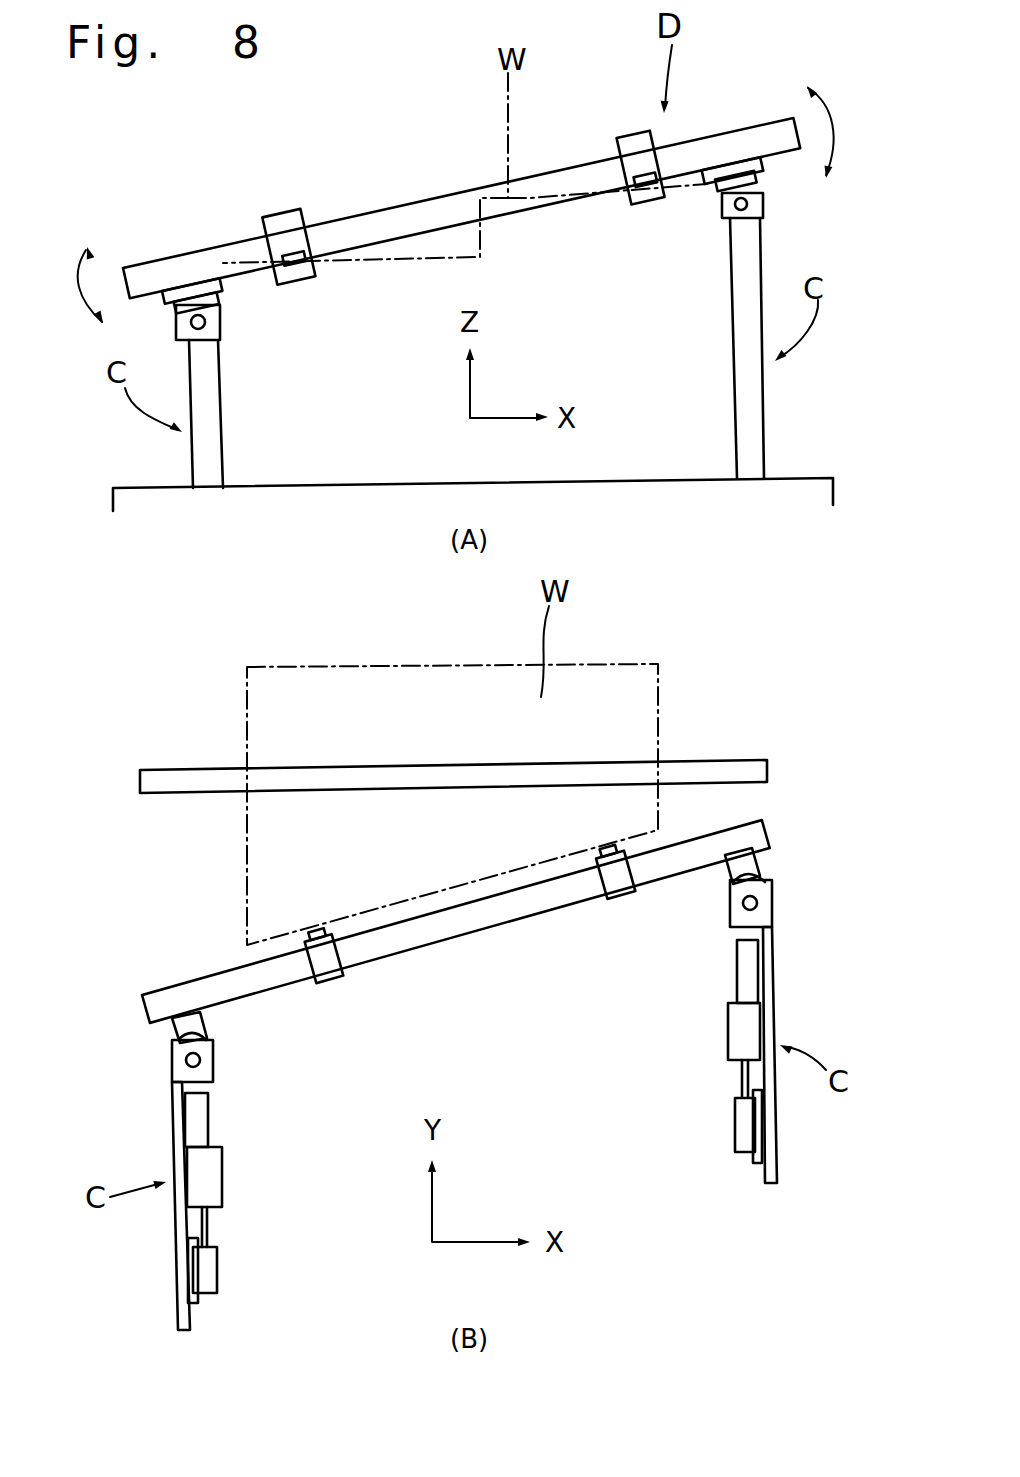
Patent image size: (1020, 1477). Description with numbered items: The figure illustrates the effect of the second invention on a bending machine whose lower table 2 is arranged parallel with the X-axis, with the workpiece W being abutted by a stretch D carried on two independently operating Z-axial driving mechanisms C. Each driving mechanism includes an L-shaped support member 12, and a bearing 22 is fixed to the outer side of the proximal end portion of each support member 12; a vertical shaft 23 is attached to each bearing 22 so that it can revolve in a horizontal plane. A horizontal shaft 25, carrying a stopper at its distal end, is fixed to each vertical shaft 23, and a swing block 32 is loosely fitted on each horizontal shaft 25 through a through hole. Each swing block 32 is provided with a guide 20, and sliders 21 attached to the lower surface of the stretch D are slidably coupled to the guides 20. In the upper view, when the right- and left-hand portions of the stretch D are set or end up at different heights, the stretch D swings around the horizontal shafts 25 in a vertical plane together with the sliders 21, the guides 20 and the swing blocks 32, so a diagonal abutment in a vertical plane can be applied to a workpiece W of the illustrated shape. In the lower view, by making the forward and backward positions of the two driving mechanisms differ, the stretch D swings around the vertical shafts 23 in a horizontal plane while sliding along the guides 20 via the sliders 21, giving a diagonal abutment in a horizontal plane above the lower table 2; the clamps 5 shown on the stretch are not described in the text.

The lower table 2 is at (802, 505).
The clamp 5 is at (290, 263).
The L-shaped support member 12 is at (183, 1273).
The guide 20 is at (217, 298).
The slider 21 is at (195, 290).
The bearing 22 is at (210, 1060).
The vertical shaft 23 is at (180, 1021).
The horizontal shaft 25 is at (197, 330).
The swing block 32 is at (218, 323).